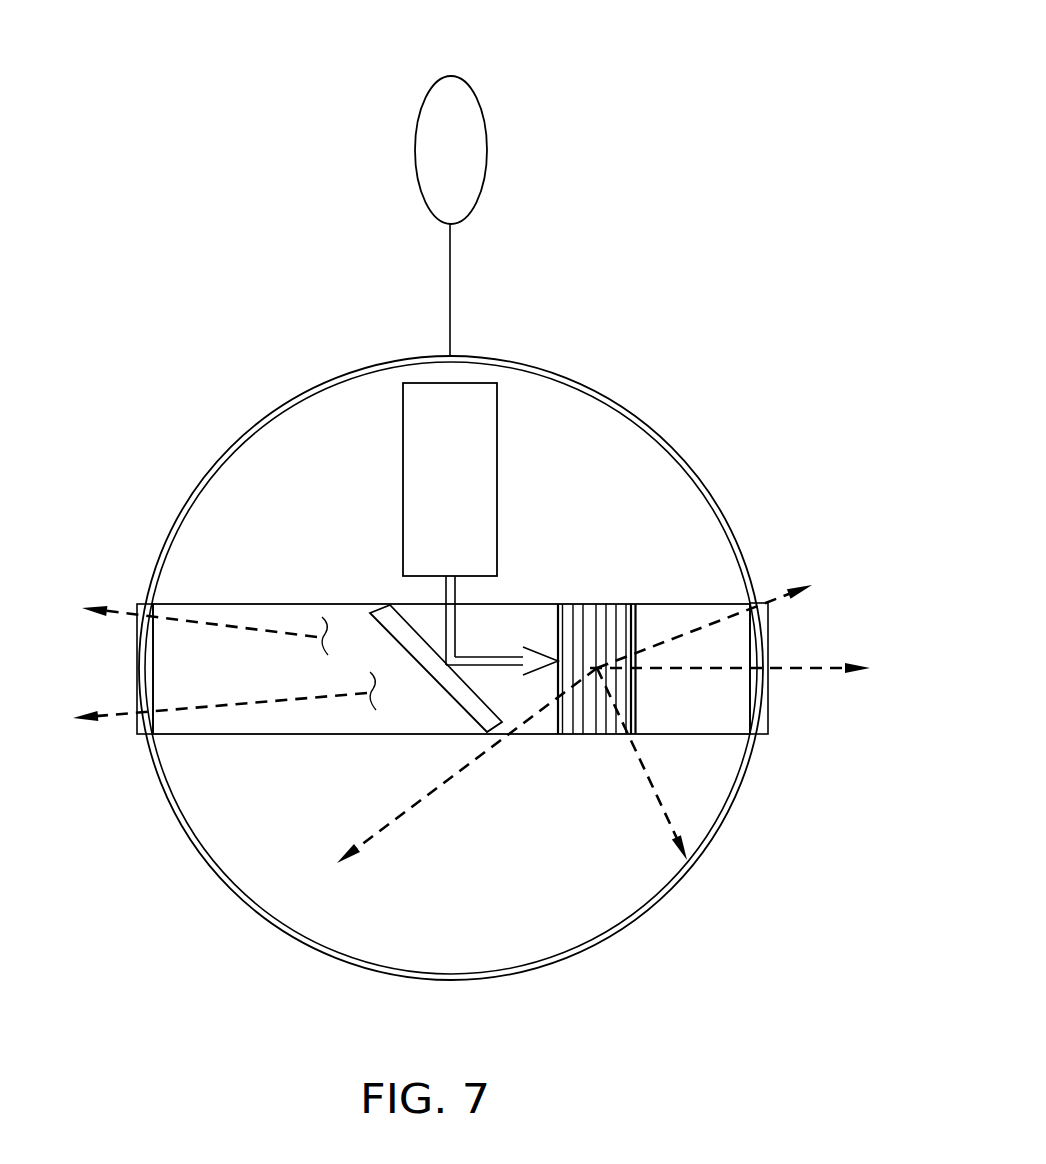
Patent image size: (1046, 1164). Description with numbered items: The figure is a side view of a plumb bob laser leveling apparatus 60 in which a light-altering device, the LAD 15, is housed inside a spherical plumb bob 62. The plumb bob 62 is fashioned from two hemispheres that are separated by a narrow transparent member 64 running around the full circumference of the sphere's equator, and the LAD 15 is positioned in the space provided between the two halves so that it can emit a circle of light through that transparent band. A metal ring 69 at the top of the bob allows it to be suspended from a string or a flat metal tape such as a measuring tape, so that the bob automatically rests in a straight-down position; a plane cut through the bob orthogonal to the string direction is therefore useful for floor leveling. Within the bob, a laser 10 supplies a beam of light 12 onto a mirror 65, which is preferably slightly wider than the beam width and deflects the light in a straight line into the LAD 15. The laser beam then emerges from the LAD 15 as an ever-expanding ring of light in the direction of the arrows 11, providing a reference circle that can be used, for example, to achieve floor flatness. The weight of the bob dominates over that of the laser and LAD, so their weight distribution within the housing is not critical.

The laser 10 is at (405, 505).
The arrows 11 is at (115, 610).
The beam of light 12 is at (455, 622).
The LAD 15 is at (635, 632).
The plumb bob laser leveling apparatus 60 is at (767, 345).
The plumb bob 62 is at (200, 478).
The narrow transparent member 64 is at (140, 737).
The mirror 65 is at (453, 735).
The metal ring 69 is at (477, 95).